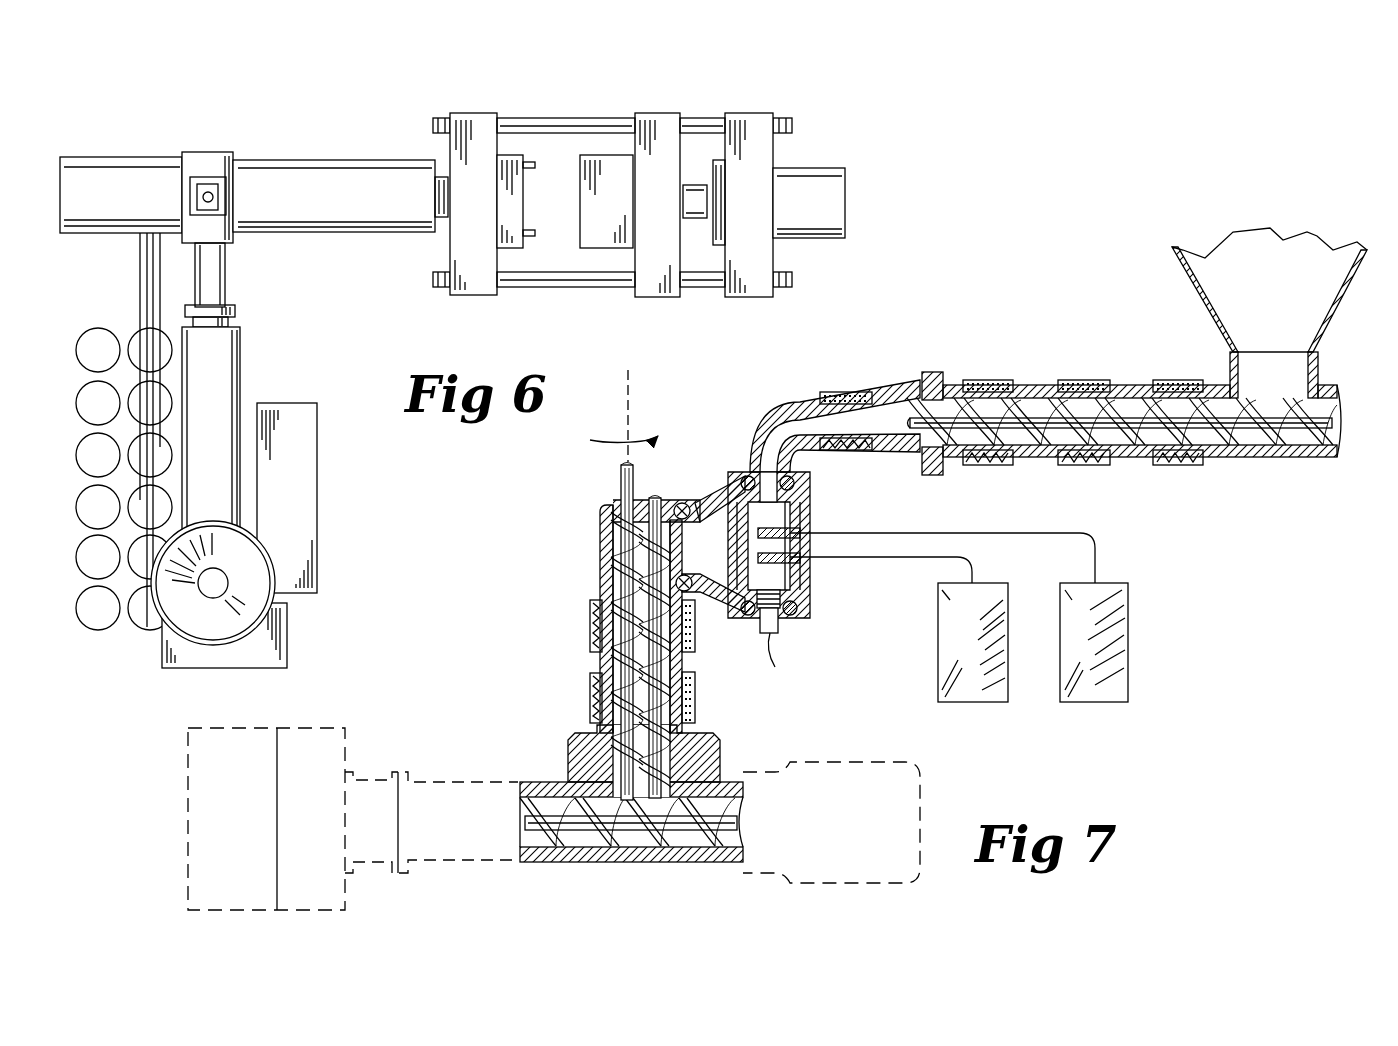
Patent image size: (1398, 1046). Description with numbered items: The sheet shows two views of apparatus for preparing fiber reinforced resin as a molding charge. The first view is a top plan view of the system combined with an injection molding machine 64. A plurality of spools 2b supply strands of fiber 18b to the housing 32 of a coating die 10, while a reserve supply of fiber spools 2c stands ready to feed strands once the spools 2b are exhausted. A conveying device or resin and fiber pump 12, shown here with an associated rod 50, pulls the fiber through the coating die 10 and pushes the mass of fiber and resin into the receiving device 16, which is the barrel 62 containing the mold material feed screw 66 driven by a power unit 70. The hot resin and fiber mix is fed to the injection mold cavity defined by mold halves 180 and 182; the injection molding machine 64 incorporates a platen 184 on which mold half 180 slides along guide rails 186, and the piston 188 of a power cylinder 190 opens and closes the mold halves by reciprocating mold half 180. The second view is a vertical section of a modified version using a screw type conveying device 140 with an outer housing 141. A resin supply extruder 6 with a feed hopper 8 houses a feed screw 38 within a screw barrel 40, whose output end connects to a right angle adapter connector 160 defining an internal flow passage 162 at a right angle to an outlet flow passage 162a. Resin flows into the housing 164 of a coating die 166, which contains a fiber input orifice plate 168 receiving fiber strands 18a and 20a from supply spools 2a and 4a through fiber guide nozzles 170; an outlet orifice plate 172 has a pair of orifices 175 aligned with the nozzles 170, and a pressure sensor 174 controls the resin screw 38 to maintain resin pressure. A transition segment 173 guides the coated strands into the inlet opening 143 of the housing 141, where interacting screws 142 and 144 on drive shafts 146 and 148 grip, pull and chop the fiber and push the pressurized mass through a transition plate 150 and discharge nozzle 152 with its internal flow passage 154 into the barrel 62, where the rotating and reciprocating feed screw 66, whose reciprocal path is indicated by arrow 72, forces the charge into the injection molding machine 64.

In FIG. 7, the supply spool 2a is at (988, 702).
In FIG. 6, the fiber spools 2b is at (130, 335).
In FIG. 6, the reserve fiber spools 2c is at (82, 335).
In FIG. 7, the supply spool 4a is at (1130, 630).
In FIG. 7, the resin supply extruder 6 is at (1093, 349).
In FIG. 6, the feed hopper 8 is at (285, 594).
In FIG. 7, the feed hopper 8 is at (1313, 245).
In FIG. 6, the coating die 10 is at (196, 160).
In FIG. 6, the fiber and resin conveying device 12 is at (197, 171).
In FIG. 7, the fiber and resin conveying device 12 is at (621, 585).
In FIG. 6, the receiving device 16 is at (340, 178).
In FIG. 7, the receiving device 16 is at (446, 795).
In FIG. 7, the fiber strand 18a is at (1010, 533).
In FIG. 6, the fiber strands 18b is at (142, 282).
In FIG. 7, the fiber strand 20a is at (972, 566).
In FIG. 6, the housing 32 is at (192, 188).
In FIG. 7, the feed screw 38 is at (1283, 433).
In FIG. 6, the screw barrel 40 is at (240, 378).
In FIG. 7, the screw barrel 40 is at (1247, 457).
In FIG. 6, the piston rod 50 is at (225, 283).
In FIG. 6, the barrel 62 is at (340, 232).
In FIG. 7, the barrel 62 is at (548, 863).
In FIG. 6, the injection molding machine 64 is at (668, 213).
In FIG. 7, the injection molding machine 64 is at (298, 727).
In FIG. 7, the feed screw 66 is at (631, 848).
In FIG. 6, the power unit 70 is at (86, 157).
In FIG. 7, the power unit 70 is at (920, 793).
In FIG. 7, the arrow 72 is at (750, 825).
In FIG. 7, the screw pump 140 is at (609, 590).
In FIG. 7, the outer housing 141 is at (598, 568).
In FIG. 7, the interacting screw 142 is at (615, 575).
In FIG. 7, the inlet opening 143 is at (692, 597).
In FIG. 7, the interacting screw 144 is at (697, 668).
In FIG. 7, the drive shaft 146 is at (619, 468).
In FIG. 7, the drive shaft 148 is at (667, 736).
In FIG. 7, the transition plate 150 is at (568, 755).
In FIG. 7, the discharge nozzle 152 is at (680, 803).
In FIG. 7, the internal flow passage 154 is at (647, 800).
In FIG. 7, the adapter connector 160 is at (794, 426).
In FIG. 7, the internal flow passage 162 is at (880, 415).
In FIG. 7, the outlet flow passage 162a is at (768, 493).
In FIG. 7, the housing 164 is at (812, 485).
In FIG. 7, the fiber coating die 166 is at (804, 577).
In FIG. 7, the fiber input orifice plate 168 is at (810, 520).
In FIG. 7, the fiber guide nozzles 170 is at (812, 547).
In FIG. 7, the outlet orifice plate 172 is at (717, 503).
In FIG. 7, the transition segment 173 is at (697, 502).
In FIG. 7, the pressure sensor 174 is at (814, 625).
In FIG. 7, the orifices 175 is at (800, 503).
In FIG. 6, the mold half 180 is at (580, 168).
In FIG. 6, the mold half 182 is at (536, 225).
In FIG. 6, the platen 184 is at (662, 298).
In FIG. 6, the guide rails 186 is at (614, 118).
In FIG. 6, the piston 188 is at (698, 222).
In FIG. 6, the power cylinder 190 is at (845, 200).